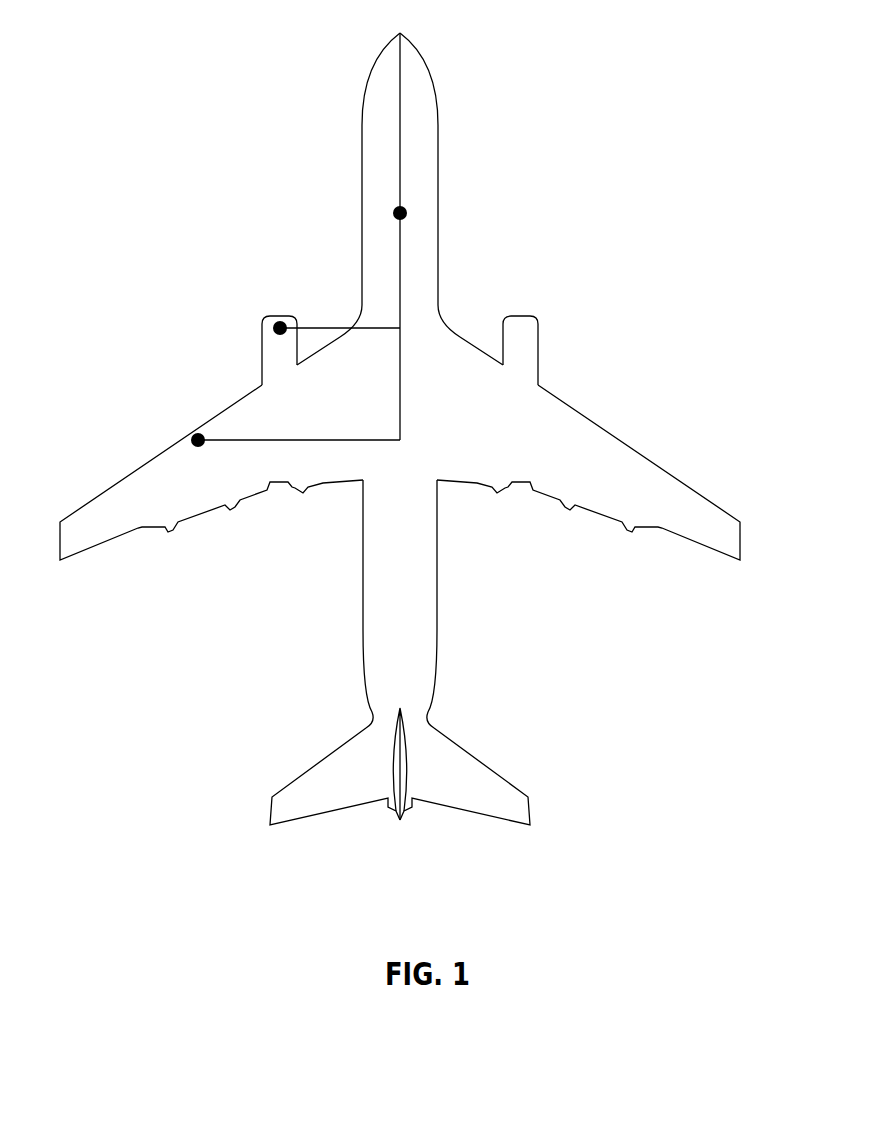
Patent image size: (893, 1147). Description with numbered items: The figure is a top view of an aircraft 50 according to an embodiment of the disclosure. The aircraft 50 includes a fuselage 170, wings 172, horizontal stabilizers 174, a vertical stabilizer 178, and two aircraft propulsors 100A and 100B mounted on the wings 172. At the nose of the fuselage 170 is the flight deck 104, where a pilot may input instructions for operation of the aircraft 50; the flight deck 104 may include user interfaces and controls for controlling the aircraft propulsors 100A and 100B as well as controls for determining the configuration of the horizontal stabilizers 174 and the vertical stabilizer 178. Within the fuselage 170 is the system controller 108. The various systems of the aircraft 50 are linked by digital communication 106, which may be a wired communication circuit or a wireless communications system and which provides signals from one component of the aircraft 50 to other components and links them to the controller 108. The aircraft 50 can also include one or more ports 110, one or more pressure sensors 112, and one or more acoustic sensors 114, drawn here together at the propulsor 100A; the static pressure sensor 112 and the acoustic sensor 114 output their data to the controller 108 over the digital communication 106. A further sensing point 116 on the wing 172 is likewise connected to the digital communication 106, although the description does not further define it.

The aircraft 50 is at (368, 85).
The flight deck 104 is at (449, 66).
The system controller 108 is at (491, 218).
The fuselage 170 is at (362, 190).
The port 110 is at (183, 277).
The pressure sensor 112 is at (183, 277).
The acoustic sensor 114 is at (278, 322).
The aircraft propulsor 100A is at (275, 320).
The aircraft propulsor 100B is at (538, 318).
The sensor 116 is at (197, 433).
The wings 172 is at (103, 493).
The digital communication channel 106 is at (394, 266).
The horizontal stabilizers 174 is at (307, 773).
The vertical stabilizer 178 is at (392, 760).